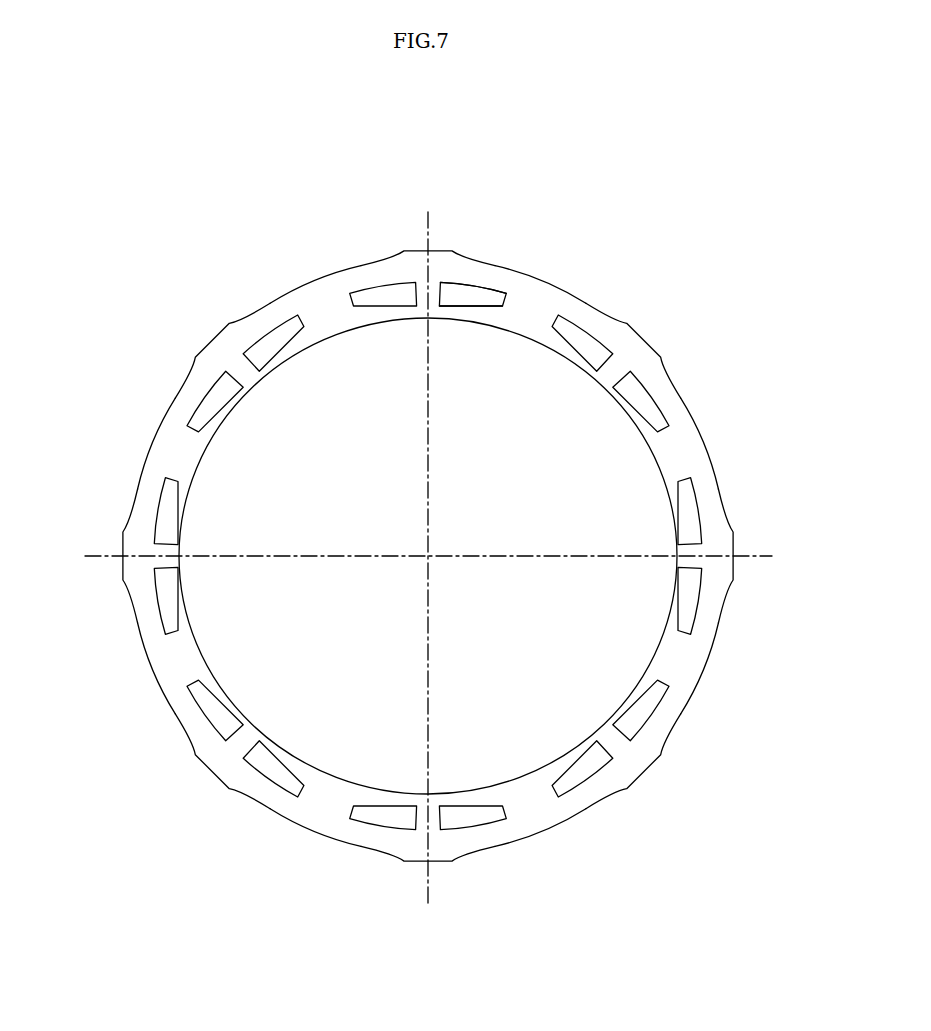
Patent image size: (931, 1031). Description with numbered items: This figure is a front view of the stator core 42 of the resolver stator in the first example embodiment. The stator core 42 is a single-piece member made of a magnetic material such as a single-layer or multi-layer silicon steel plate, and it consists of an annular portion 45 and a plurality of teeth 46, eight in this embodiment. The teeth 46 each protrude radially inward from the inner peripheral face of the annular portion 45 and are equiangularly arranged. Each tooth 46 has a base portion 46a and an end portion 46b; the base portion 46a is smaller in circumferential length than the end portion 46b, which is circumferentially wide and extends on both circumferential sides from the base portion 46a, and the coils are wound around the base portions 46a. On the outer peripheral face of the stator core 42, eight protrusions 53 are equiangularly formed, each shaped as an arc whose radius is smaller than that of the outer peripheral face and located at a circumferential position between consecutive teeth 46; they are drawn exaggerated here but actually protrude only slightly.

The stator core 42 is at (550, 268).
The annular portion 45 is at (605, 318).
The teeth 46 is at (256, 440).
The base portion 46a is at (522, 303).
The end portion 46b is at (458, 318).
The protrusions 53 is at (418, 256).